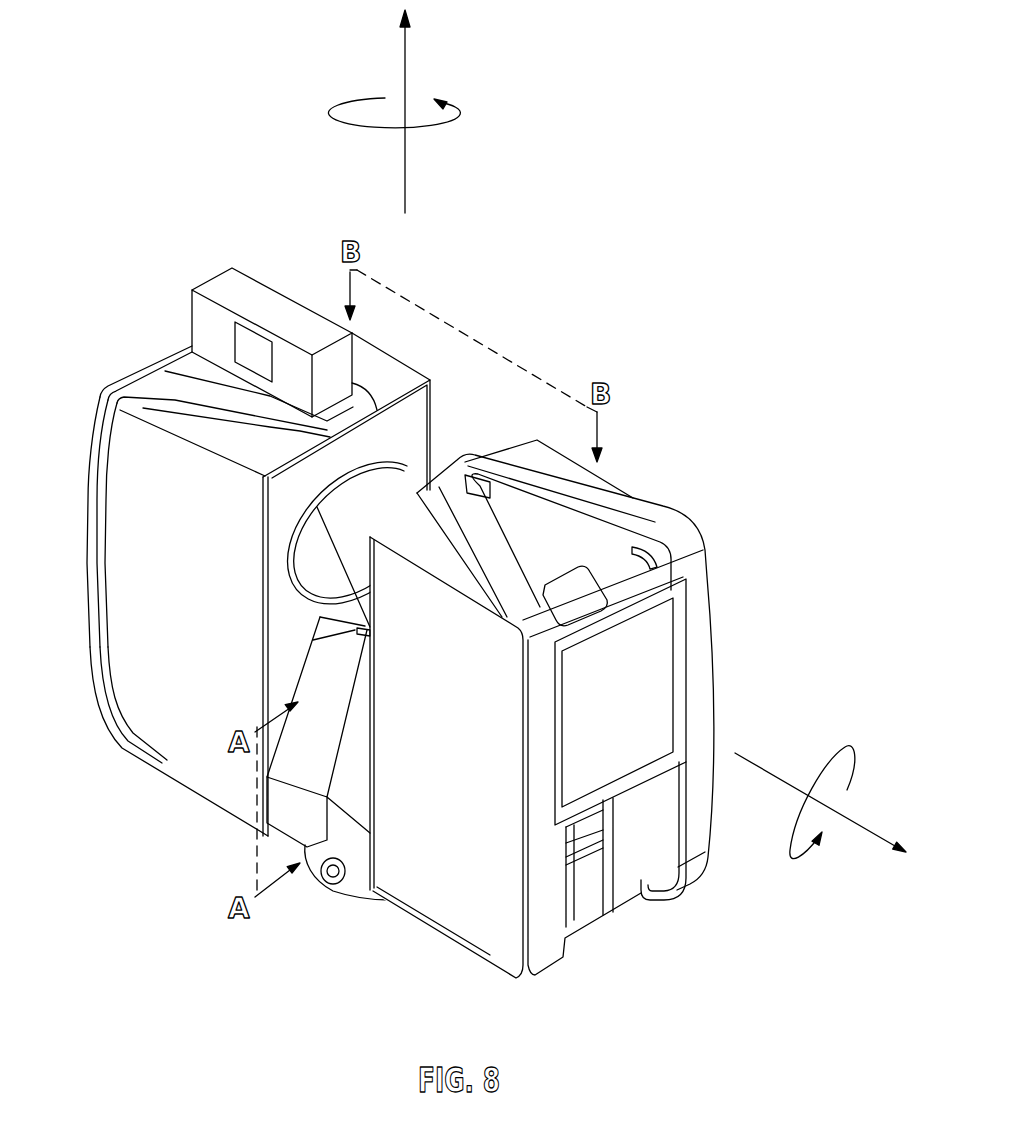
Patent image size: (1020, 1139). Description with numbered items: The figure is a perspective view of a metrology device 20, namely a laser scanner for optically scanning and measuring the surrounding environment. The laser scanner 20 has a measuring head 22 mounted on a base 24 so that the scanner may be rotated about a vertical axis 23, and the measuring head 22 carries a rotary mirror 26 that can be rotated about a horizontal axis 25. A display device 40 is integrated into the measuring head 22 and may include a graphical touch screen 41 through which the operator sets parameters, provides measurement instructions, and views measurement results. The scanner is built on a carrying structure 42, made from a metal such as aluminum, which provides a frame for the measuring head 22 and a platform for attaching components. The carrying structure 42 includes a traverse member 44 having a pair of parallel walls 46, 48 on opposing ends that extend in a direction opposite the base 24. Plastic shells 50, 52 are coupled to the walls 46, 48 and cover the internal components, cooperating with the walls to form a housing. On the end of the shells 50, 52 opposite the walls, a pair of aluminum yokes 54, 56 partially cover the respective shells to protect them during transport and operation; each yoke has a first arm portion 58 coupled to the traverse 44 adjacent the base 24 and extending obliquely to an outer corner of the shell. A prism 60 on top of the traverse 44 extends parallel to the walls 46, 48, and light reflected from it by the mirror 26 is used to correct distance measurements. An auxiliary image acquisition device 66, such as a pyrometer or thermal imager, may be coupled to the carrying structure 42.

The metrology device 20 is at (165, 125).
The measuring head 22 is at (663, 390).
The vertical axis 23 is at (405, 78).
The base 24 is at (332, 885).
The horizontal axis 25 is at (878, 830).
The rotary mirror 26 is at (345, 497).
The display device 40 is at (593, 693).
The graphical touch screen 41 is at (652, 635).
The carrying structure 42 is at (263, 624).
The traverse member 44 is at (295, 860).
The wall 46 is at (538, 443).
The wall 48 is at (418, 410).
The shell 50 is at (132, 623).
The shell 52 is at (470, 915).
The yoke 54 is at (660, 516).
The yoke 56 is at (152, 380).
The first arm portion 58 is at (124, 753).
The prism 60 is at (357, 637).
The auxiliary image acquisition device 66 is at (212, 275).